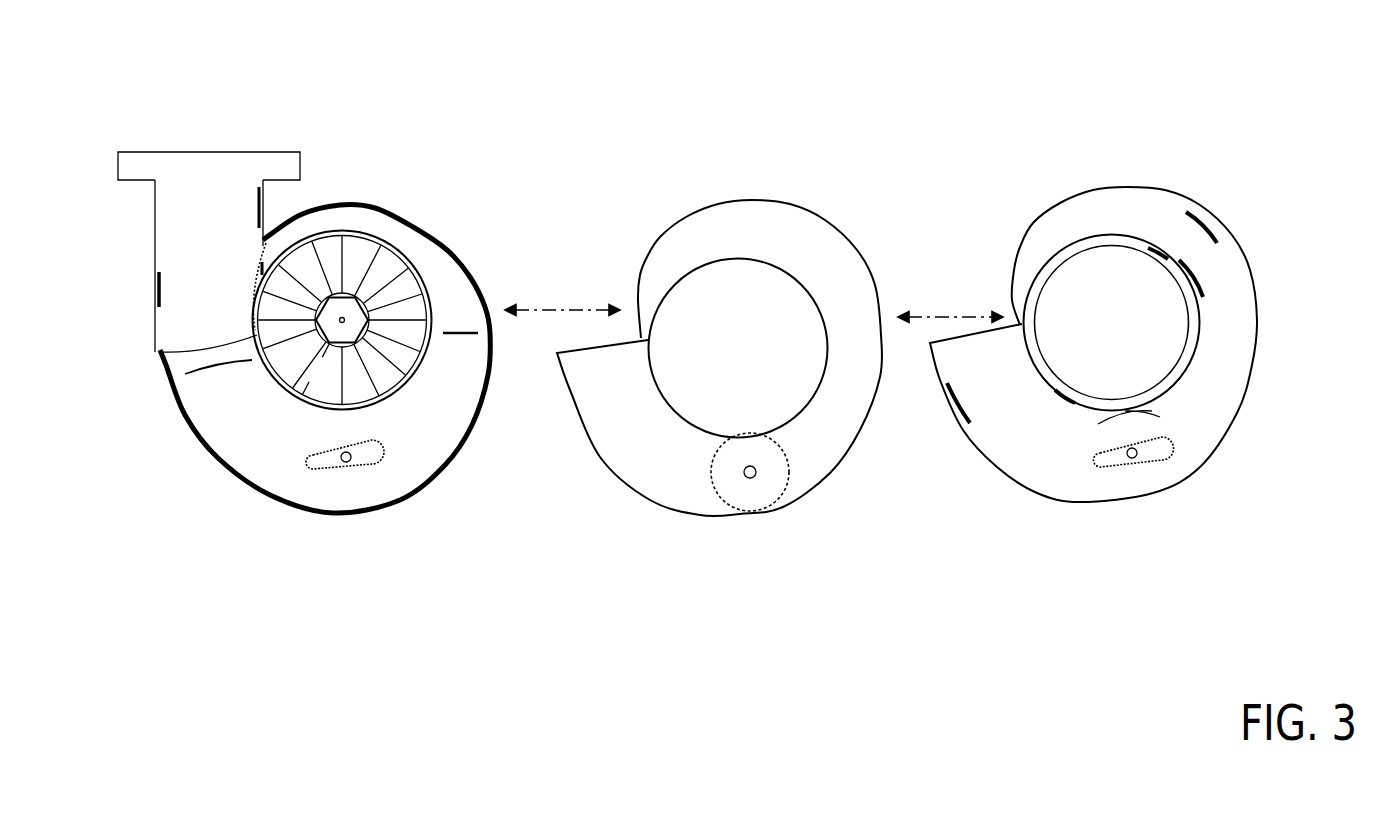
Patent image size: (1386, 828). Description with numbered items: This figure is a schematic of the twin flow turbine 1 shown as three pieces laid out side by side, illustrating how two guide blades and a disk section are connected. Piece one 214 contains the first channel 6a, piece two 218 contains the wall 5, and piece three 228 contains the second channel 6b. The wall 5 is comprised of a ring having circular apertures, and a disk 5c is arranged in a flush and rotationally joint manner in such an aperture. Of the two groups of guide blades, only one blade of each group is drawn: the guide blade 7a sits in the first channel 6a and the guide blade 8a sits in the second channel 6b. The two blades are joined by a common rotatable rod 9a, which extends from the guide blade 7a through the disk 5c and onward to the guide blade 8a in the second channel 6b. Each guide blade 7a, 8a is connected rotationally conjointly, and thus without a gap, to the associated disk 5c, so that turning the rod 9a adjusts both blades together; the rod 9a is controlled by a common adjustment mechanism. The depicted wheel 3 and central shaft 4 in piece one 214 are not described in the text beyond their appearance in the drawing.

The twin flow turbine 1 is at (1062, 230).
The compressor wheel 3 is at (324, 381).
The shaft 4 is at (342, 320).
The wall 5 is at (637, 436).
The disk 5c is at (362, 480).
The first channel 6a is at (242, 436).
The second channel 6b is at (997, 408).
The guide blade 7a is at (370, 455).
The guide blade 8a is at (1157, 451).
The rod 9a is at (298, 463).
The piece one 214 is at (120, 502).
The piece two 218 is at (898, 200).
The piece three 228 is at (918, 198).